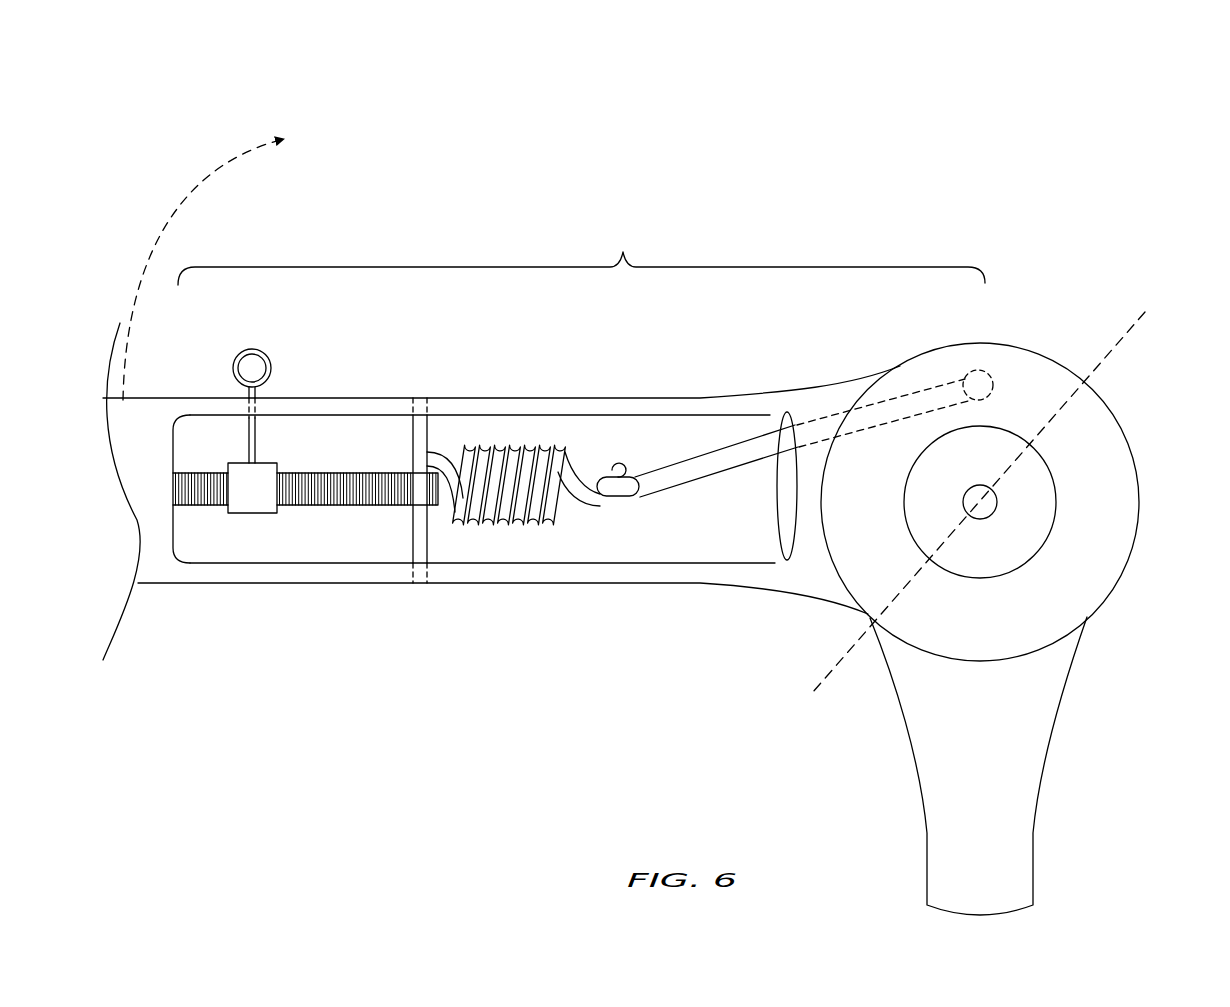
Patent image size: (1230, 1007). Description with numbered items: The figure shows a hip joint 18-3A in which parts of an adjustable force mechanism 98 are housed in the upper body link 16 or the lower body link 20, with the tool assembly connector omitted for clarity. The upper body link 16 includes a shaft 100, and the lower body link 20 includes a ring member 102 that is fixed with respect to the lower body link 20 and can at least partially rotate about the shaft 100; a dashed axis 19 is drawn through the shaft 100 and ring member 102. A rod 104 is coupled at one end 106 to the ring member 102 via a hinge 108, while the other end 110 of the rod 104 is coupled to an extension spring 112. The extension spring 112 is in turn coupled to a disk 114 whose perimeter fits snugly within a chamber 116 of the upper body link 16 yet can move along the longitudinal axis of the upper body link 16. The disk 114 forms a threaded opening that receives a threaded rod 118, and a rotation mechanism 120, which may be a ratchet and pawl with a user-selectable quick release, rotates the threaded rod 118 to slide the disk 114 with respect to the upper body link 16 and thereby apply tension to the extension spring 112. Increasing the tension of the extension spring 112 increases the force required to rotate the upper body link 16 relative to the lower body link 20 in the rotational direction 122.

The upper body link 16 is at (167, 402).
The axis 19 is at (1137, 327).
The lower body link 20 is at (1023, 842).
The adjustable force mechanism 98 is at (581, 256).
The shaft 100 is at (1028, 520).
The ring member 102 is at (1078, 610).
The rod 104 is at (757, 448).
The end of the rod 106 is at (966, 366).
The hinge 108 is at (993, 387).
The other end of the rod 110 is at (636, 500).
The extension spring 112 is at (510, 523).
The disk 114 is at (420, 537).
The chamber 116 is at (384, 432).
The threaded rod 118 is at (332, 502).
The rotation mechanism 120 is at (243, 473).
The rotational direction 122 is at (167, 213).
The hip joint 18-3A is at (1076, 116).